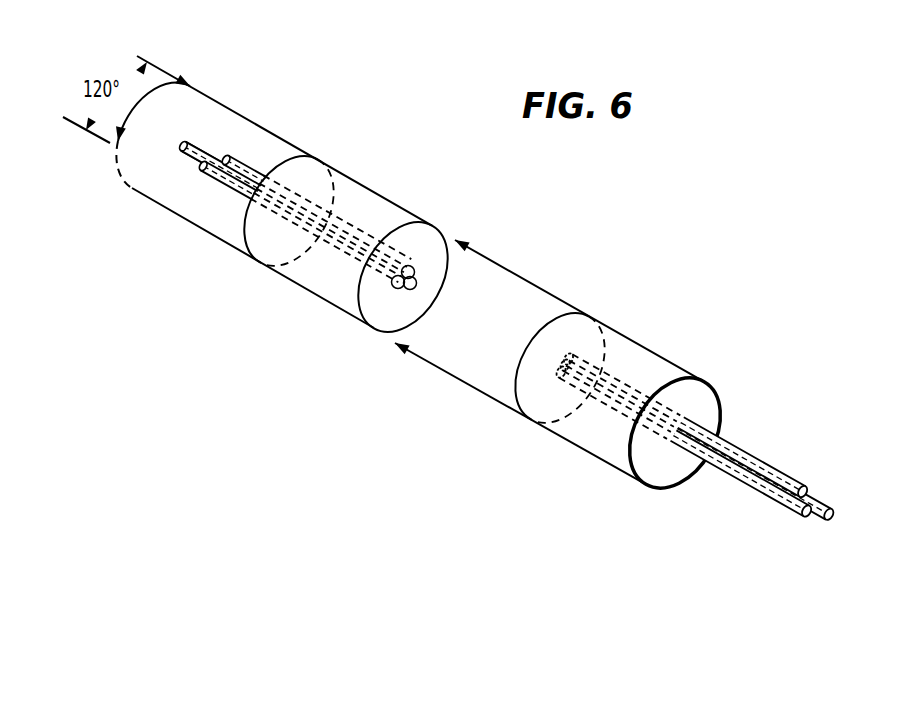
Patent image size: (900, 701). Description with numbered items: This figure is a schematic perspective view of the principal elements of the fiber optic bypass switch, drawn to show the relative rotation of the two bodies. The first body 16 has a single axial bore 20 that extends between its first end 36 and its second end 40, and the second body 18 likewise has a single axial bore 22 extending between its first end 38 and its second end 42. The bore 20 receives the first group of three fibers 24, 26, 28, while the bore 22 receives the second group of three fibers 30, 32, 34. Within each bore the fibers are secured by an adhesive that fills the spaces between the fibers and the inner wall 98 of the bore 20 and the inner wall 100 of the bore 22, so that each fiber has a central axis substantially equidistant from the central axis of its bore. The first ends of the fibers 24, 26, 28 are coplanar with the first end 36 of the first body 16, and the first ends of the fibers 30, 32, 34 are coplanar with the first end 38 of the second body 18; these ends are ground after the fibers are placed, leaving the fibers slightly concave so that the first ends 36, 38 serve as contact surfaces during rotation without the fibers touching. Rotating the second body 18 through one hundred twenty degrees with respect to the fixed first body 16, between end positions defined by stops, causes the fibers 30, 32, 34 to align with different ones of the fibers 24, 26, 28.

The first body 16 is at (641, 300).
The second body 18 is at (403, 183).
The axial bore 20 is at (672, 407).
The axial bore 22 is at (388, 310).
The fiber 24 is at (808, 487).
The fiber 26 is at (835, 513).
The fiber 28 is at (808, 513).
The fiber 30 is at (388, 310).
The fiber 32 is at (395, 334).
The fiber 34 is at (447, 238).
The first end 36 is at (516, 387).
The first end 38 is at (388, 297).
The second end 40 is at (650, 468).
The second end 42 is at (243, 228).
The inner wall 98 is at (388, 258).
The inner wall 100 is at (666, 424).